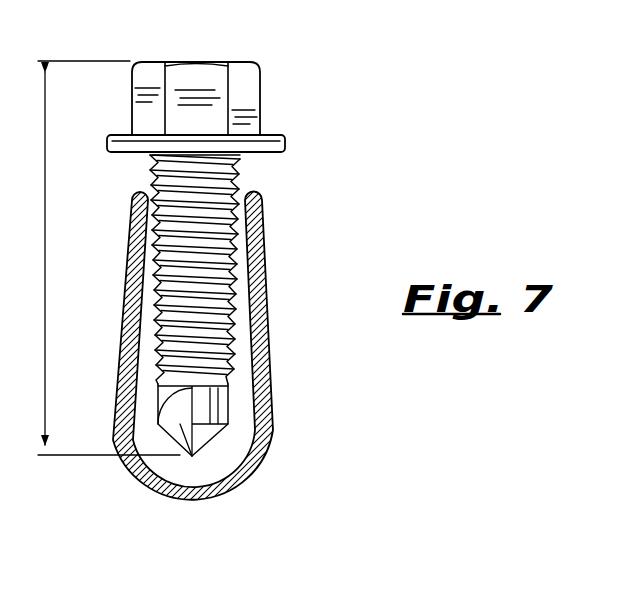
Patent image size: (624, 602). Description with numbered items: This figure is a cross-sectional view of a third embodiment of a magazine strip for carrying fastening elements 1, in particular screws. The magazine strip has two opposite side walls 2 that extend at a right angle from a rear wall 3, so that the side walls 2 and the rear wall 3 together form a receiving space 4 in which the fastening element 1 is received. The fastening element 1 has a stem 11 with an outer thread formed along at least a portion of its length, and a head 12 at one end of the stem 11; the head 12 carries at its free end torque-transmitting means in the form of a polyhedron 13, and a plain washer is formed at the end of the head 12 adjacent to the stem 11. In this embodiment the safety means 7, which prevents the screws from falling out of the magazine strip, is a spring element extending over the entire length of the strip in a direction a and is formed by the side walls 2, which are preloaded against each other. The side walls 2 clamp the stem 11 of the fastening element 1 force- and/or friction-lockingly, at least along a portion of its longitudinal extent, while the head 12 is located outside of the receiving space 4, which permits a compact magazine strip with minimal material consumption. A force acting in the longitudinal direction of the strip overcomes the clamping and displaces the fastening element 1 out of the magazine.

The fastening element 1 is at (236, 411).
The side walls 2 is at (312, 300).
The rear wall 3 is at (312, 300).
The receiving space 4 is at (219, 462).
The safety means 7 is at (312, 300).
The stem 11 is at (240, 185).
The head 12 is at (200, 68).
The polyhedron 13 is at (268, 68).
The direction a is at (103, 258).